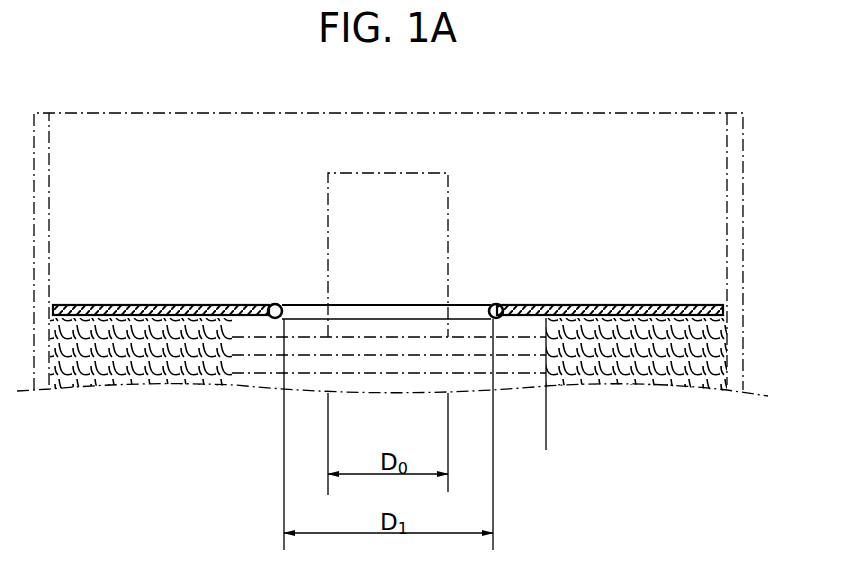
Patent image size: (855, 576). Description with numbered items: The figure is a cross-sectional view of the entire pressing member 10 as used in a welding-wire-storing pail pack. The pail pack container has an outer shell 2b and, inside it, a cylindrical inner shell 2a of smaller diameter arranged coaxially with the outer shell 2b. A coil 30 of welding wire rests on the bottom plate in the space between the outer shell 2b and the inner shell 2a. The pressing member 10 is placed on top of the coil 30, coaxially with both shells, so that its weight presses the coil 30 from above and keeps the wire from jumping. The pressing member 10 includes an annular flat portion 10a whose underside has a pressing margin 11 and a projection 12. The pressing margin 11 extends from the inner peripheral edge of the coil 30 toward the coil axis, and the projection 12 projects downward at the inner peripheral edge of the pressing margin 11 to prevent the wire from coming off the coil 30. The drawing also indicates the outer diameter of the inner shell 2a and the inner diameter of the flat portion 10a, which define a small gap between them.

The inner shell 2a is at (436, 187).
The outer shell 2b is at (741, 166).
The pressing member 10 is at (388, 269).
The flat portion 10a is at (162, 306).
The pressing margin 11 is at (546, 442).
The projection 12 is at (268, 305).
The coil 30 is at (158, 360).